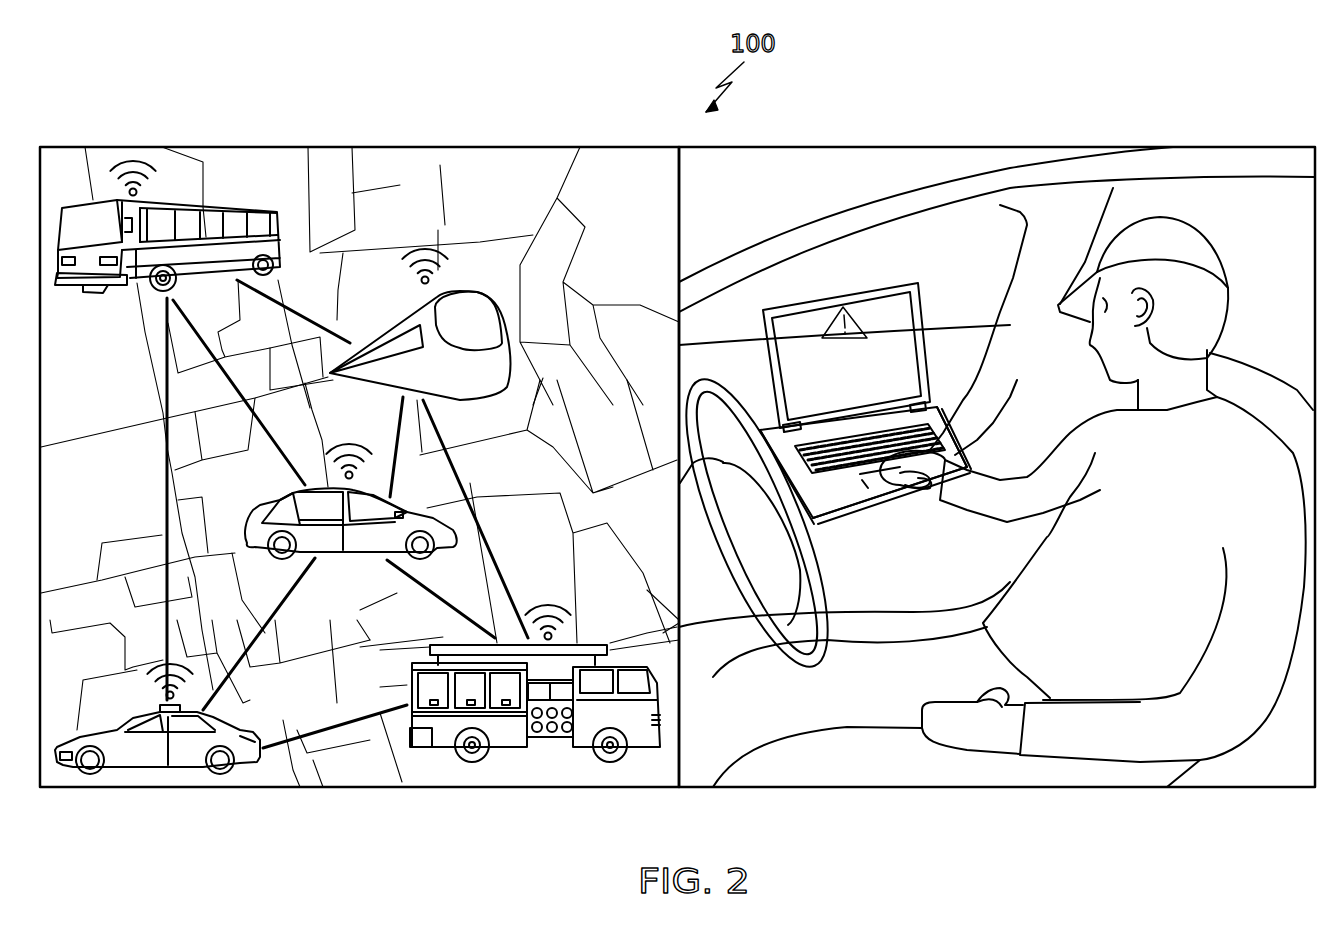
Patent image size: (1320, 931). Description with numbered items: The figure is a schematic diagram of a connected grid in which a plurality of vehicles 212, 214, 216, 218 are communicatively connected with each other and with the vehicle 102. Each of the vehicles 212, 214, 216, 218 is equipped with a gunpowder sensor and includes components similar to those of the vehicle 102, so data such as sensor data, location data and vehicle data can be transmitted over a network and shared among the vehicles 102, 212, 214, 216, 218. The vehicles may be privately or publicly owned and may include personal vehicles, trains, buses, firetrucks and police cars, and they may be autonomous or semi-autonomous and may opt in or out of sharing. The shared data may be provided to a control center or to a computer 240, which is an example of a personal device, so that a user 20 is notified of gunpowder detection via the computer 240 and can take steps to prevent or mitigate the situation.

The vehicle 218 is at (238, 200).
The vehicle 216 is at (460, 290).
The vehicle 102 is at (370, 562).
The vehicle 212 is at (153, 770).
The vehicle 214 is at (517, 750).
The user 20 is at (1245, 720).
The computer 240 is at (935, 295).